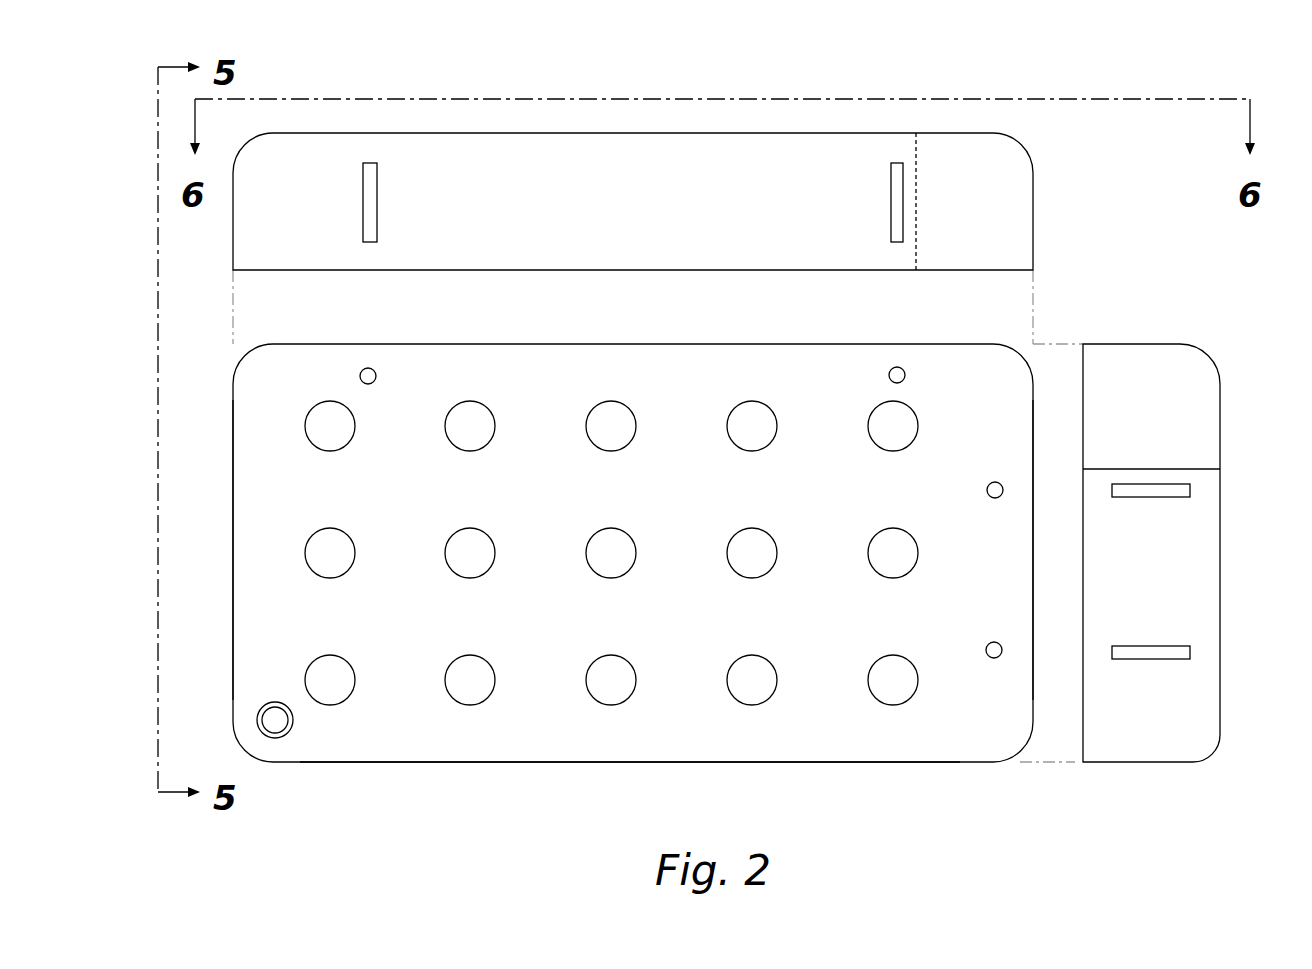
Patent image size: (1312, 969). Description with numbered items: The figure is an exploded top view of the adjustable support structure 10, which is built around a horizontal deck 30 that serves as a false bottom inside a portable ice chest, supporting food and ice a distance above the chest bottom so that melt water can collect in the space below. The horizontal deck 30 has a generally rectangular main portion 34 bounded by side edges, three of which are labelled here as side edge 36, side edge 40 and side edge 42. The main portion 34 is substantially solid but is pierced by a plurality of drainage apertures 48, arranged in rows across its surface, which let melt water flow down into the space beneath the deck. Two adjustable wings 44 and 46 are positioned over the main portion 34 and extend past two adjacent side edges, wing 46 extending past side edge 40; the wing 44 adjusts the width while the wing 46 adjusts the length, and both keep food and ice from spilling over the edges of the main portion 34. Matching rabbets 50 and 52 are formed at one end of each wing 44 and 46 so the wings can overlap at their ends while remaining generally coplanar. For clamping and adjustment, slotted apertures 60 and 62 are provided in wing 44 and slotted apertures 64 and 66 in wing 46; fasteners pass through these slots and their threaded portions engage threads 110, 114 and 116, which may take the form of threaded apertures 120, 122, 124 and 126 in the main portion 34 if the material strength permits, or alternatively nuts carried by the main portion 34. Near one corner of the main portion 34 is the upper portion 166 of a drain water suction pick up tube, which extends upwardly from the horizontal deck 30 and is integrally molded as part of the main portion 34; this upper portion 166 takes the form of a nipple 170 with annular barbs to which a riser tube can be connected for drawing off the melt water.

The adjustable support structure 10 is at (1192, 266).
The horizontal deck 30 is at (1080, 292).
The main portion 34 is at (668, 705).
The side edge 36 is at (233, 532).
The side edge 40 is at (1033, 567).
The side edge 42 is at (438, 762).
The adjustable wing 44 is at (560, 205).
The adjustable wing 46 is at (1163, 600).
The drainage apertures 48 is at (486, 548).
The rabbet 50 is at (985, 193).
The rabbet 52 is at (1148, 418).
The slotted aperture 60 is at (377, 218).
The slotted aperture 62 is at (891, 203).
The slotted aperture 64 is at (1155, 497).
The slotted aperture 66 is at (1148, 659).
The threads 110 is at (345, 318).
The threads 114 is at (953, 490).
The threads 116 is at (957, 641).
The threaded aperture 120 is at (372, 369).
The threaded aperture 122 is at (901, 368).
The threaded aperture 124 is at (993, 498).
The threaded aperture 126 is at (991, 658).
The upper portion 166 is at (282, 737).
The nipple 170 is at (262, 712).